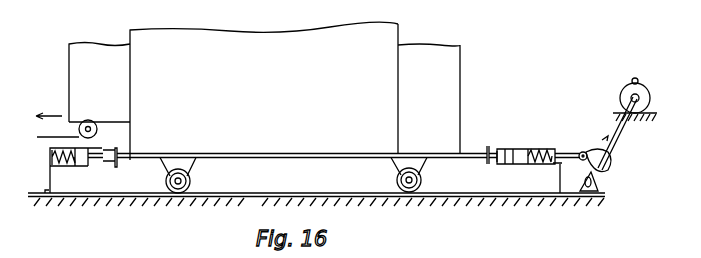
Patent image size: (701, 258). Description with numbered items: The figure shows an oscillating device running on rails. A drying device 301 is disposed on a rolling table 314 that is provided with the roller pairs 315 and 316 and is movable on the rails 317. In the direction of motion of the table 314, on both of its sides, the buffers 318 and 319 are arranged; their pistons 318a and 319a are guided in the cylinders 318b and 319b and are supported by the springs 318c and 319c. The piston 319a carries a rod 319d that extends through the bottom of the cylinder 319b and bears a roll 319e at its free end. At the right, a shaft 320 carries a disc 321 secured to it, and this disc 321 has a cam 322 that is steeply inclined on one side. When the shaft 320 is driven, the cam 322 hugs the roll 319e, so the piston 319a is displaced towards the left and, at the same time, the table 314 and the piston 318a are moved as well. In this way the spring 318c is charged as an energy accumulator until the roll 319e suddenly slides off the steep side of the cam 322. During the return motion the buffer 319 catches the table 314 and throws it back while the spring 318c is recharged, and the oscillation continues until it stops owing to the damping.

The drying device 301 is at (452, 106).
The rolling table 314 is at (260, 158).
The roller pair 315 is at (176, 193).
The roller pair 316 is at (406, 193).
The rails 317 is at (259, 197).
The buffer 318 is at (76, 164).
The piston 318a is at (103, 163).
The cylinder 318b is at (78, 167).
The spring 318c is at (51, 158).
The buffer 319 is at (533, 159).
The piston 319a is at (492, 164).
The cylinder 319b is at (522, 149).
The spring 319c is at (531, 165).
The rod 319d is at (566, 148).
The roll 319e is at (574, 162).
The shaft 320 is at (623, 128).
The disc 321 is at (604, 167).
The cam 322 is at (612, 160).